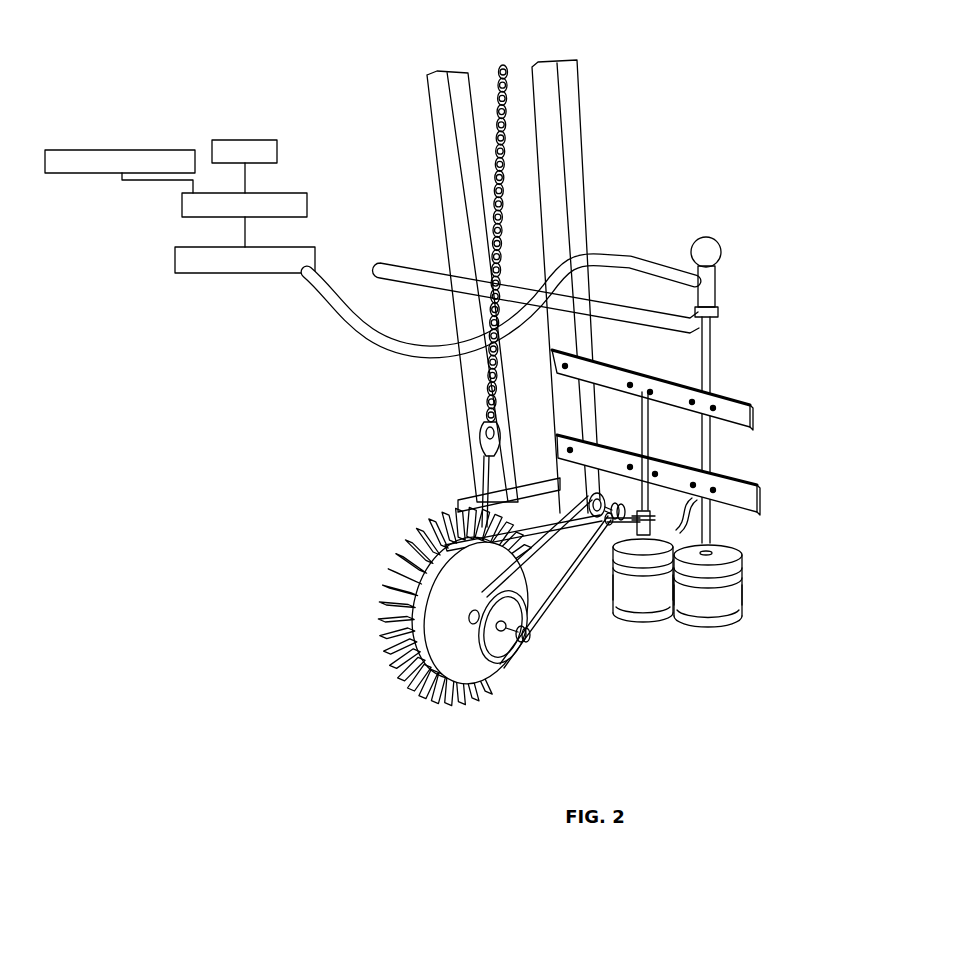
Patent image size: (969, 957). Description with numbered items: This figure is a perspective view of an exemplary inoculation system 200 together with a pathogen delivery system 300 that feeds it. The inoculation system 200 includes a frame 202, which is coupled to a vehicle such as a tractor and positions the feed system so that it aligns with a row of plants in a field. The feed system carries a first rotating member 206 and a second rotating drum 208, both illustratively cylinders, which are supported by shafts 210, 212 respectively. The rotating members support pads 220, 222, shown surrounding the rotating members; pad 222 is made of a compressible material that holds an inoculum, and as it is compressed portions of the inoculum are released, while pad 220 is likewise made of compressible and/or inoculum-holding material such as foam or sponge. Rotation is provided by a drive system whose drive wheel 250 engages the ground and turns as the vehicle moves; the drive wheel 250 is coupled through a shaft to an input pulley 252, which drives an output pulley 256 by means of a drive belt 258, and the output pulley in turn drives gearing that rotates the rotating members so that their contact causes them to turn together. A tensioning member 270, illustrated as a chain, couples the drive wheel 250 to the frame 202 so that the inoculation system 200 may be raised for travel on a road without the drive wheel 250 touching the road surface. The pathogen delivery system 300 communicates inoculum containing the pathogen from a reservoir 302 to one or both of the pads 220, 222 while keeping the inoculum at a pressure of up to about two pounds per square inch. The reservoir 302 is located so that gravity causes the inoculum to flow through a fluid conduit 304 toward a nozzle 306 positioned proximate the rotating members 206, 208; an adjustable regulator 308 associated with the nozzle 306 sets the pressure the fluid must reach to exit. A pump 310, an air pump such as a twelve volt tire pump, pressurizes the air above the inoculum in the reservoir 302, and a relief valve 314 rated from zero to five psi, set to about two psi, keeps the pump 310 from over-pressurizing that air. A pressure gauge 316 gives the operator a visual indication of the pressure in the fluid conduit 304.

The inoculation system 200 is at (574, 301).
The frame 202 is at (536, 305).
The first rotating member 206 is at (739, 627).
The second rotating drum 208 is at (624, 630).
The shaft 210 is at (666, 451).
The shaft 212 is at (677, 432).
The pad 220 is at (740, 588).
The pad 222 is at (624, 636).
The drive wheel 250 is at (503, 628).
The input pulley 252 is at (504, 653).
The output pulley 256 is at (615, 555).
The drive belt 258 is at (546, 582).
The tensioning member 270 is at (560, 275).
The pathogen delivery system 300 is at (217, 206).
The reservoir 302 is at (182, 200).
The fluid conduit 304 is at (501, 325).
The nozzle 306 is at (732, 516).
The adjustable regulator 308 is at (245, 273).
The pump 310 is at (257, 139).
The relief valve 314 is at (121, 150).
The pressure gauge 316 is at (730, 362).